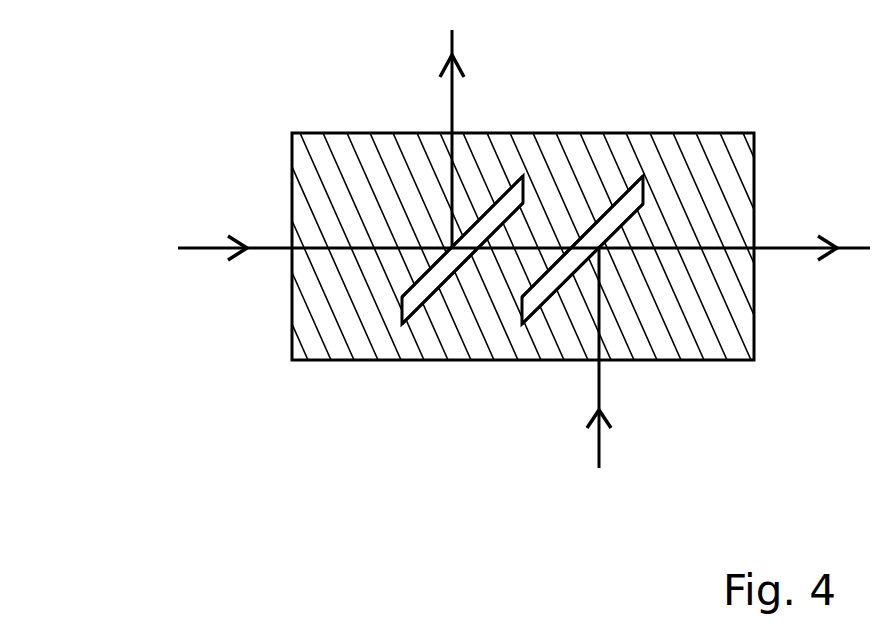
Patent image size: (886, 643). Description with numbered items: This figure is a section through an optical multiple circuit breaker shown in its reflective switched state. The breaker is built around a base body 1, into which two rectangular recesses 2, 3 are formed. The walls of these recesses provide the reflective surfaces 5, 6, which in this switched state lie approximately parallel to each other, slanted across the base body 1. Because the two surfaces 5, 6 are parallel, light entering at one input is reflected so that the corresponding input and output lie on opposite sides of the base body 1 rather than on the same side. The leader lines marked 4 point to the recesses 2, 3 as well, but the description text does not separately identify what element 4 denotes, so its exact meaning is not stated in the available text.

The base body 1 is at (393, 130).
The rectangular recess 2 is at (402, 309).
The rectangular recess 3 is at (522, 313).
The mirror layer 4 is at (624, 210).
The surface 5 is at (477, 217).
The surface 6 is at (620, 230).